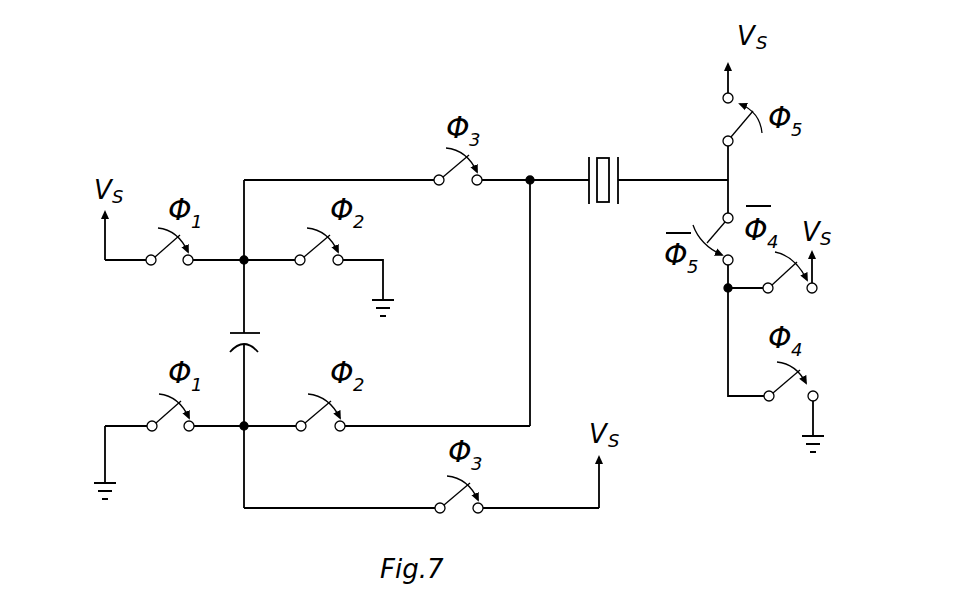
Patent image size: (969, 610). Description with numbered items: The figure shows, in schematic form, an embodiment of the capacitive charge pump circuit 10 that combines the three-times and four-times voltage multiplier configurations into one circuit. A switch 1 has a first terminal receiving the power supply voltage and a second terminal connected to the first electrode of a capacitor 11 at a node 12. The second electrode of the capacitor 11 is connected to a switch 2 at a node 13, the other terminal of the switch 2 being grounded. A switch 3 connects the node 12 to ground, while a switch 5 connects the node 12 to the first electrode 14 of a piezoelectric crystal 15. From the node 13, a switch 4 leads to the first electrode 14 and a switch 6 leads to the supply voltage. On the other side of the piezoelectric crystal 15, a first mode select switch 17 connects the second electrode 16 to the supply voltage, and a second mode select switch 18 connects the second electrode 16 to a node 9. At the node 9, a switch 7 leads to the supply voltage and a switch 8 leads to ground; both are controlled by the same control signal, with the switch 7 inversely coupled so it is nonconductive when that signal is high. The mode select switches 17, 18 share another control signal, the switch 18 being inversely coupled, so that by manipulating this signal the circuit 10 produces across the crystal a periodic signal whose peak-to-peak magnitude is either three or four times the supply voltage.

The switch 1 is at (172, 258).
The switch 2 is at (175, 423).
The switch 3 is at (322, 263).
The switch 4 is at (320, 423).
The switch 5 is at (457, 178).
The switch 6 is at (460, 505).
The switch 7 is at (785, 290).
The switch 8 is at (793, 390).
The node 9 is at (726, 290).
The capacitive charge pump circuit 10 is at (213, 527).
The capacitor 11 is at (238, 330).
The node 12 is at (247, 258).
The node 13 is at (250, 430).
The first electrode 14 is at (588, 172).
The piezoelectric crystal 15 is at (603, 157).
The second electrode 16 is at (620, 170).
The first mode select switch 17 is at (728, 118).
The second mode select switch 18 is at (713, 220).